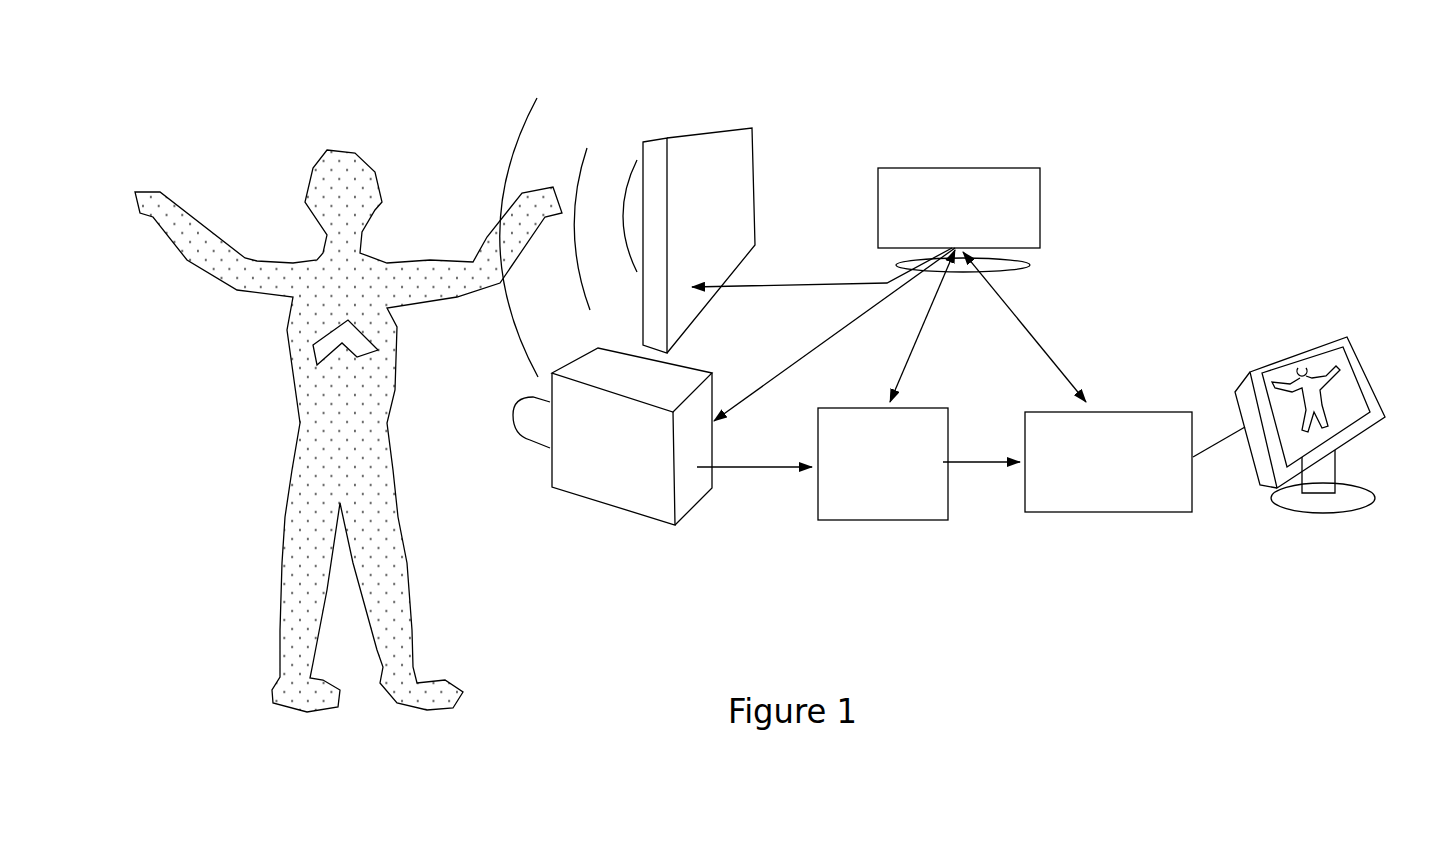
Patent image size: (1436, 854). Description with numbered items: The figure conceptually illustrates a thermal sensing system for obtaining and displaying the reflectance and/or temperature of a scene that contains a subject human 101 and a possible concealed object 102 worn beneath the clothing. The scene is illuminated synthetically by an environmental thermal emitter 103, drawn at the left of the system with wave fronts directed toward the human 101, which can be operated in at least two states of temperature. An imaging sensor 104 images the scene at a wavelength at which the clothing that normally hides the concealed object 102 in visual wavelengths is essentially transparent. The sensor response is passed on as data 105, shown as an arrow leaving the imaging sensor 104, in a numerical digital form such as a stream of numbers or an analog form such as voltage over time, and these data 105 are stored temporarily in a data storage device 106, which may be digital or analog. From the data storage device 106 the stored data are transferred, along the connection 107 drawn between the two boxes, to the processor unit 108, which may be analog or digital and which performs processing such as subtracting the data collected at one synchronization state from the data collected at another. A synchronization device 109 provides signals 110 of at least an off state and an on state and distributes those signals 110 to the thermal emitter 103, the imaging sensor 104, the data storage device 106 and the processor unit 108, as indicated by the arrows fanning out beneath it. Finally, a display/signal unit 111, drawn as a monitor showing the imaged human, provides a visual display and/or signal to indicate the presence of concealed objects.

The subject human 101 is at (313, 165).
The concealed object 102 is at (307, 347).
The thermal emitter 103 is at (752, 128).
The imaging sensor 104 is at (603, 505).
The data 105 is at (768, 477).
The data storage device 106 is at (883, 523).
The processed data signal 107 is at (995, 473).
The processor unit 108 is at (1143, 512).
The synchronization device 109 is at (1040, 208).
The signals 110 is at (1030, 266).
The display/signal unit 111 is at (1243, 372).